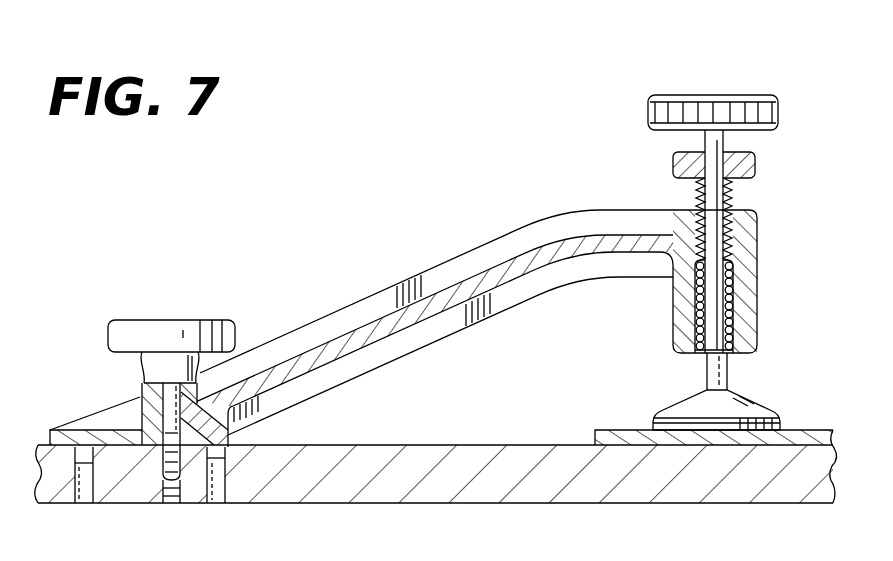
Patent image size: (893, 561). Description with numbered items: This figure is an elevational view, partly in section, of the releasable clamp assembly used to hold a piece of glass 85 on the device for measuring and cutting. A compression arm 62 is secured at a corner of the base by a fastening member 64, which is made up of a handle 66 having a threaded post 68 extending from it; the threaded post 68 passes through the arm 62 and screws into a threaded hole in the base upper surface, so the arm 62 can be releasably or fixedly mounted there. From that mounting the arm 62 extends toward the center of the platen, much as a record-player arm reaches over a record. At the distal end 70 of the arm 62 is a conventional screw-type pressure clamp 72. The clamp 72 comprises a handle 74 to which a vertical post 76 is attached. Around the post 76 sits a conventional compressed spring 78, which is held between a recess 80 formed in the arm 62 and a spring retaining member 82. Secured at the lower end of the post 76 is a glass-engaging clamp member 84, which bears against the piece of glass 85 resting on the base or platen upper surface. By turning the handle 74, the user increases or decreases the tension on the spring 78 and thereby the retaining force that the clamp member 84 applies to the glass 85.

The compression arm 62 is at (432, 268).
The fastening member 64 is at (118, 322).
The handle 66 is at (192, 322).
The threaded post 68 is at (175, 500).
The distal end 70 is at (756, 212).
The screw-type pressure clamp 72 is at (755, 162).
The handle 74 is at (718, 95).
The vertical post 76 is at (726, 257).
The compressed spring 78 is at (733, 317).
The recess 80 is at (690, 274).
The spring retaining member 82 is at (735, 356).
The glass-engaging clamp member 84 is at (762, 408).
The piece of glass 85 is at (631, 402).